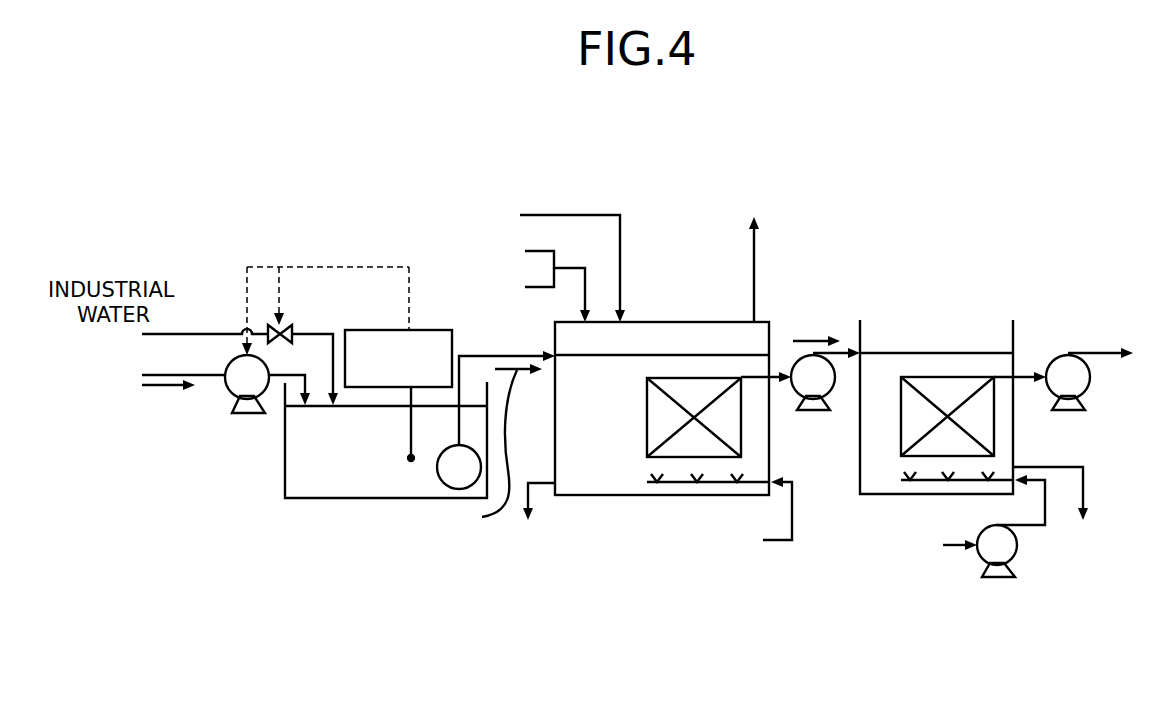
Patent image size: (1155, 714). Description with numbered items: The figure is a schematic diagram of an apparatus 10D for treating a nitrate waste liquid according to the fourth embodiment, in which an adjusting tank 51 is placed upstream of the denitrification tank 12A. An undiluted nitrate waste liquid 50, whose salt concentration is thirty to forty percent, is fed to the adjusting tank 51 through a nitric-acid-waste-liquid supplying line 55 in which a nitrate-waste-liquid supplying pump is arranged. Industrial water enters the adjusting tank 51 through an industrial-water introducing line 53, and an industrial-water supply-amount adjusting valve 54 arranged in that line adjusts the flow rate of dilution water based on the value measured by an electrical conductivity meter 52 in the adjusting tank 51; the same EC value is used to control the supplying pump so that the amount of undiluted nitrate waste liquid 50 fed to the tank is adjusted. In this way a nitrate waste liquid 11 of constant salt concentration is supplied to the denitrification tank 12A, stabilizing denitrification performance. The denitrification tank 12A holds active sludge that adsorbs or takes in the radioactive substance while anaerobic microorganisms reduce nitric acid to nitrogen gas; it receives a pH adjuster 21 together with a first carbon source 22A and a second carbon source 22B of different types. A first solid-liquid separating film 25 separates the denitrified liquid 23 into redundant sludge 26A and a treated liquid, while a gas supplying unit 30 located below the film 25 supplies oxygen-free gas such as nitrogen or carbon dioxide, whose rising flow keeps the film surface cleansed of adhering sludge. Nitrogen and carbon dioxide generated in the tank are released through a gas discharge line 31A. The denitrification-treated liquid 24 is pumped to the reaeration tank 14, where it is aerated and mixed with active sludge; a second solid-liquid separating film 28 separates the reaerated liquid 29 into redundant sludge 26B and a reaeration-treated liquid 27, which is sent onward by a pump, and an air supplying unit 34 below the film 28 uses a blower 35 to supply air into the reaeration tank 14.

The apparatus for treating a nitrate waste liquid 10D is at (850, 158).
The undiluted nitrate waste liquid 50 is at (155, 387).
The nitric-acid-waste-liquid supplying line 55 is at (215, 376).
The industrial-water introducing line 53 is at (232, 330).
The industrial-water supply-amount adjusting valve 54 is at (294, 331).
The electrical conductivity meter 52 is at (432, 330).
The adjusting tank 51 is at (364, 622).
The nitrate waste liquid 11 is at (482, 517).
The denitrification tank 12A is at (620, 615).
The denitrified liquid 23 is at (648, 365).
The first solid-liquid separating film 25 is at (688, 377).
The pH adjuster 21 is at (555, 265).
The first carbon source 22A is at (531, 280).
The second carbon source 22B is at (513, 285).
The gas discharge line 31A is at (753, 243).
The redundant sludge 26A is at (531, 518).
The gas supplying unit 30 is at (647, 477).
The denitrification-treated liquid 24 is at (803, 338).
The reaeration tank 14 is at (916, 632).
The reaerated liquid 29 is at (878, 370).
The second solid-liquid separating film 28 is at (944, 376).
The reaeration-treated liquid 27 is at (1063, 367).
The air supplying unit 34 is at (985, 475).
The blower 35 is at (978, 558).
The redundant sludge 26B is at (1058, 509).